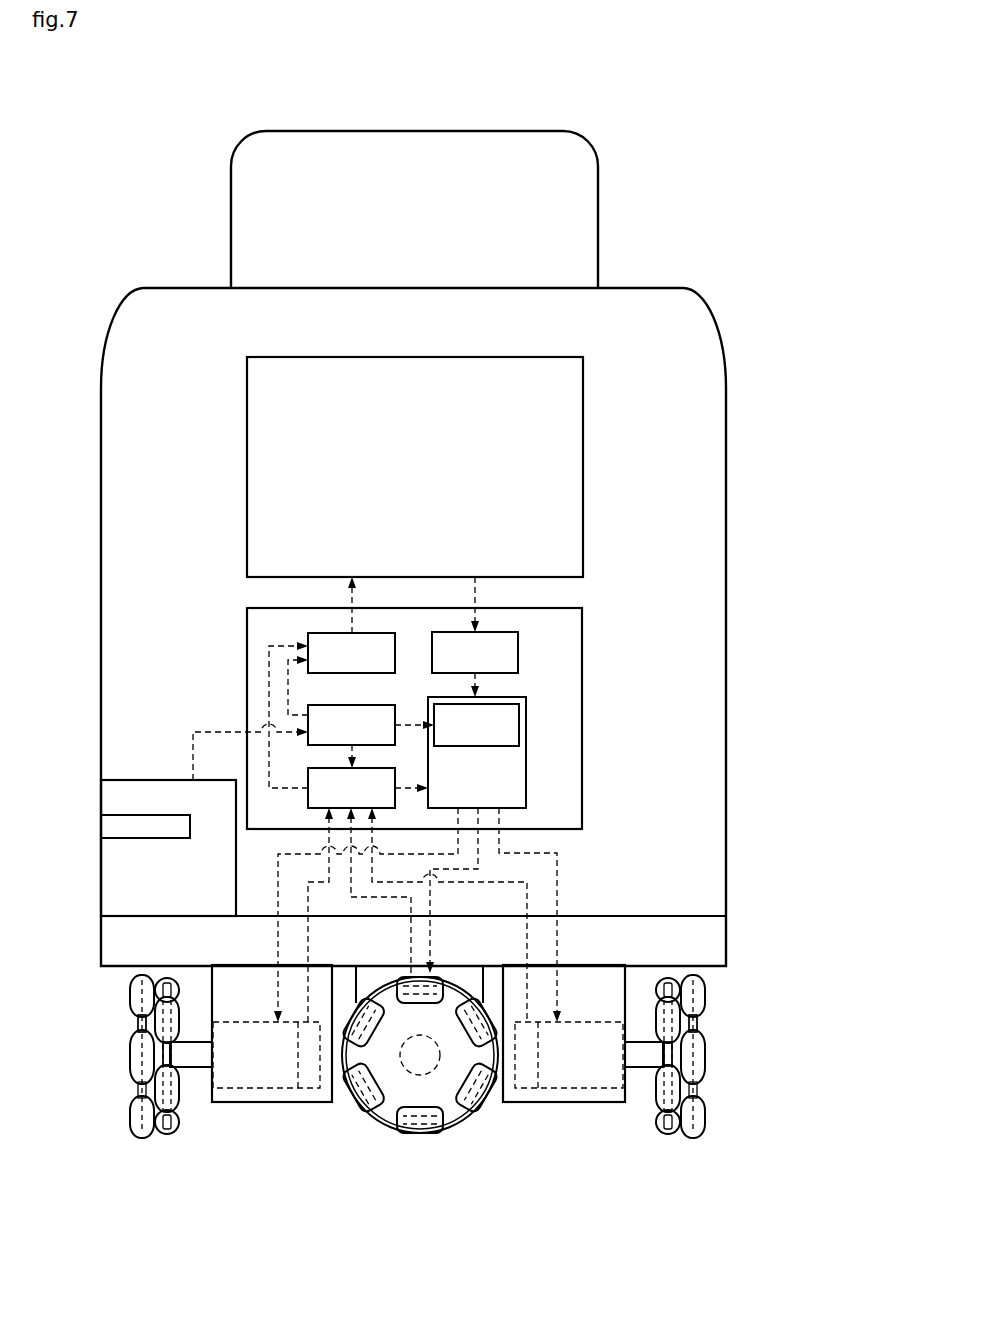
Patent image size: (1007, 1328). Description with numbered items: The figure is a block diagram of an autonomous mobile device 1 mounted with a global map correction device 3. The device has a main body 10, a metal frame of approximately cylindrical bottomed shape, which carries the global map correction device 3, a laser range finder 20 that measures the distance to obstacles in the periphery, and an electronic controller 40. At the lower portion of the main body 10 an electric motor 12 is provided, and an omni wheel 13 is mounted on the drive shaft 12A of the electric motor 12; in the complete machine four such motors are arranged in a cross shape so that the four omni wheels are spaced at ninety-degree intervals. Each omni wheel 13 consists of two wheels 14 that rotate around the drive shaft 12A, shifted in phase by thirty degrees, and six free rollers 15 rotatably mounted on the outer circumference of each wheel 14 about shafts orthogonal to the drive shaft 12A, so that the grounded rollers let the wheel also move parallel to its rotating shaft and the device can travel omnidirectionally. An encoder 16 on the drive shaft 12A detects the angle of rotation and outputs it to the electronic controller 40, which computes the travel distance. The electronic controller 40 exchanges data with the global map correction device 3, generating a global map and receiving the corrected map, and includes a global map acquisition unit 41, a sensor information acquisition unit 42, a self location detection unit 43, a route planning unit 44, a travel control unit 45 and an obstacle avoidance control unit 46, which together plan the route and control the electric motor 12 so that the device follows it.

The autonomous mobile device 1 is at (637, 118).
The global map correction device 3 is at (583, 464).
The main body 10 is at (726, 508).
The electric motor 12 is at (277, 1088).
The drive shaft 12A is at (188, 1070).
The omni wheel 13 is at (133, 1138).
The wheel 14 is at (155, 1050).
The free roller 15 is at (150, 1133).
The encoder 16 is at (310, 1088).
The laser range finder 20 is at (170, 780).
The electronic controller 40 is at (582, 680).
The global map acquisition unit 41 is at (308, 643).
The sensor information acquisition unit 42 is at (308, 722).
The self location detection unit 43 is at (308, 782).
The route planning unit 44 is at (518, 655).
The travel control unit 45 is at (526, 797).
The obstacle avoidance control unit 46 is at (519, 727).